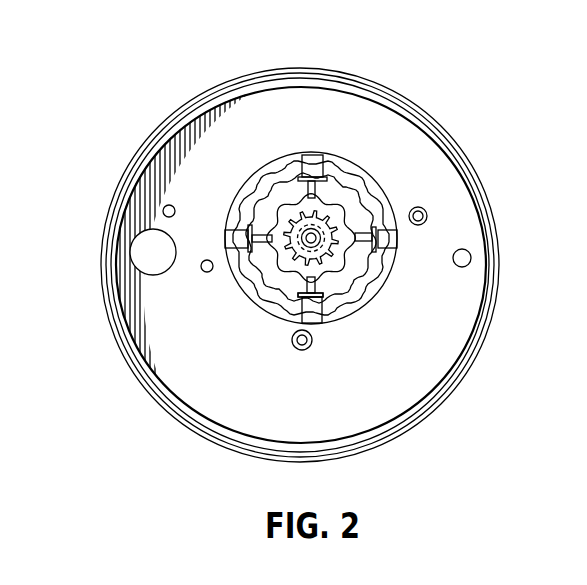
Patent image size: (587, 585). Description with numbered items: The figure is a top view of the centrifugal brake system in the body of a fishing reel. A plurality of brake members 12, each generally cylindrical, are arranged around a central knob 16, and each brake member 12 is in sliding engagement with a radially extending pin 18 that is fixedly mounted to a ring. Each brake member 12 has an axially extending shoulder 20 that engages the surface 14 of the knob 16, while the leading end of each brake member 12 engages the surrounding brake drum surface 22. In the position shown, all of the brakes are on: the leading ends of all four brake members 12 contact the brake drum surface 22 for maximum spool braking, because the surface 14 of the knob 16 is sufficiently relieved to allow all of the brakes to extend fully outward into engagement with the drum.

The brake members 12 is at (310, 166).
The surface of knob 14 is at (298, 222).
The knob 16 is at (287, 177).
The radially extending pin 18 is at (325, 177).
The shoulder 20 is at (302, 300).
The brake drum surface 22 is at (323, 303).